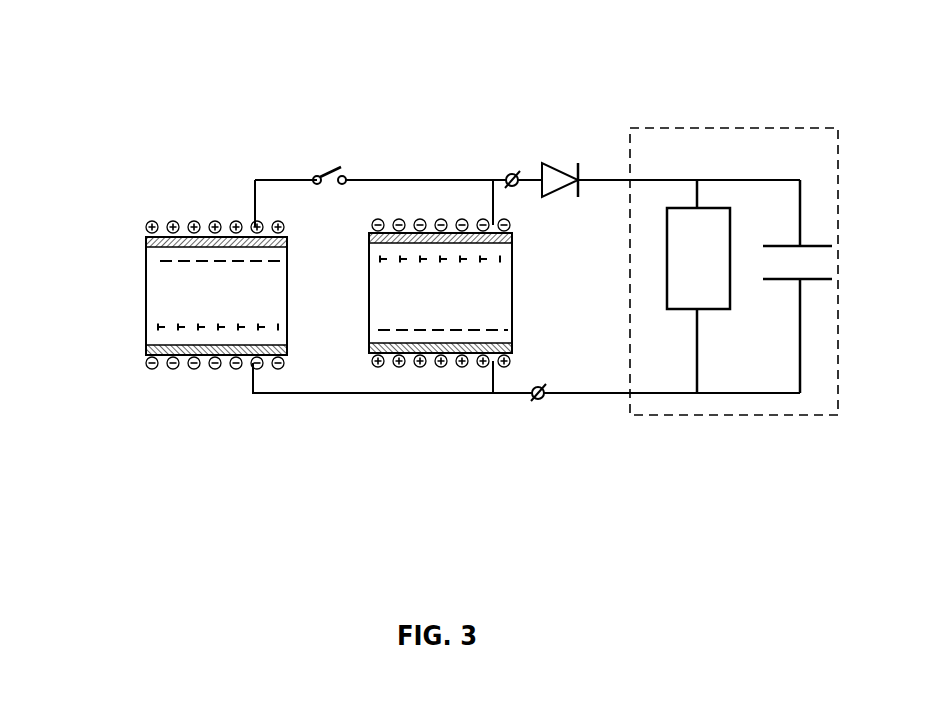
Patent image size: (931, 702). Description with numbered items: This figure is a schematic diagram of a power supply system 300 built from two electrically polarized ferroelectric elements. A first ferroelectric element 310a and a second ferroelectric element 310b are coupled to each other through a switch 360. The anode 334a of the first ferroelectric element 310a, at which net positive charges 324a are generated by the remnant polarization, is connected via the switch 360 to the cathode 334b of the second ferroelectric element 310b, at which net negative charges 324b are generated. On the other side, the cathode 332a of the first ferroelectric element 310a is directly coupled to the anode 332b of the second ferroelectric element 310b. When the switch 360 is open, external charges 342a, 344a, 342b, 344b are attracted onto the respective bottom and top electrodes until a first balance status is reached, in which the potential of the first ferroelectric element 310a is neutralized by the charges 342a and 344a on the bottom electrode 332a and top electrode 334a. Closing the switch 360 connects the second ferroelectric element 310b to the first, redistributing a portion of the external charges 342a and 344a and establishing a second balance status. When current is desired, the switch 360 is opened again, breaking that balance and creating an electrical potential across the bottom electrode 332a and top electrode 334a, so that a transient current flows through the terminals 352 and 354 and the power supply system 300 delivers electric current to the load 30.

The power supply system 300 is at (250, 88).
The first ferroelectric element 310a is at (475, 301).
The second ferroelectric element 310b is at (238, 309).
The net positive charges 324a is at (500, 262).
The net negative charges 324b is at (160, 261).
The cathode / bottom electrode 332a is at (512, 350).
The anode 332b is at (146, 352).
The anode / top electrode 334a is at (512, 238).
The cathode 334b is at (146, 240).
The external charges 342a is at (403, 368).
The external charges 342b is at (173, 369).
The external charges 344a is at (398, 219).
The external charges 344b is at (218, 220).
The switch 360 is at (322, 167).
The terminal 354 is at (519, 172).
The terminal 352 is at (538, 400).
The load 30 is at (810, 415).